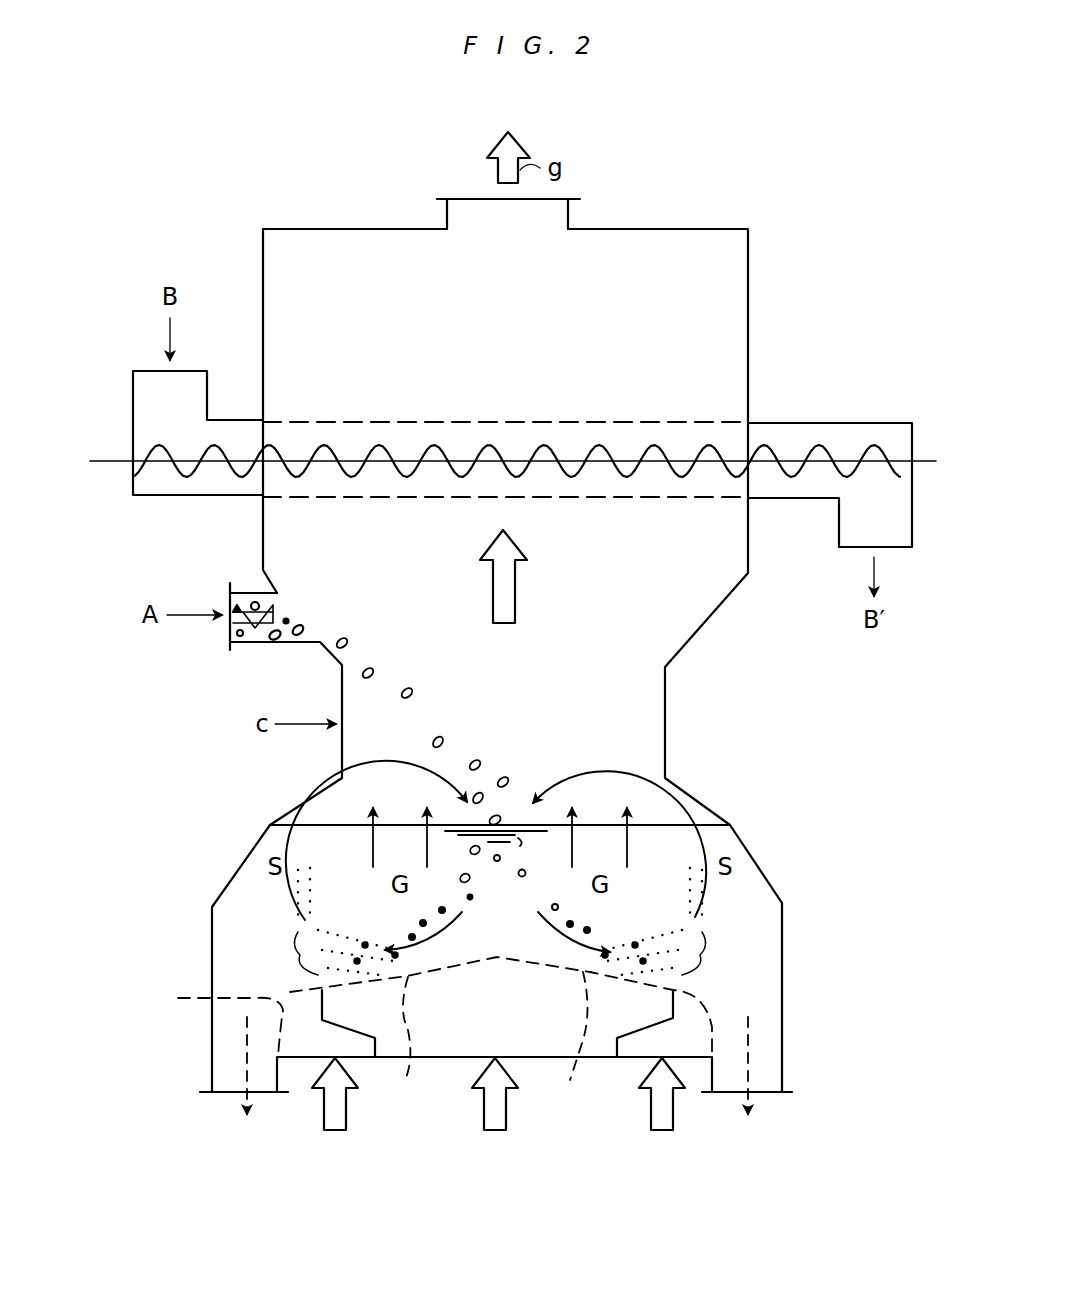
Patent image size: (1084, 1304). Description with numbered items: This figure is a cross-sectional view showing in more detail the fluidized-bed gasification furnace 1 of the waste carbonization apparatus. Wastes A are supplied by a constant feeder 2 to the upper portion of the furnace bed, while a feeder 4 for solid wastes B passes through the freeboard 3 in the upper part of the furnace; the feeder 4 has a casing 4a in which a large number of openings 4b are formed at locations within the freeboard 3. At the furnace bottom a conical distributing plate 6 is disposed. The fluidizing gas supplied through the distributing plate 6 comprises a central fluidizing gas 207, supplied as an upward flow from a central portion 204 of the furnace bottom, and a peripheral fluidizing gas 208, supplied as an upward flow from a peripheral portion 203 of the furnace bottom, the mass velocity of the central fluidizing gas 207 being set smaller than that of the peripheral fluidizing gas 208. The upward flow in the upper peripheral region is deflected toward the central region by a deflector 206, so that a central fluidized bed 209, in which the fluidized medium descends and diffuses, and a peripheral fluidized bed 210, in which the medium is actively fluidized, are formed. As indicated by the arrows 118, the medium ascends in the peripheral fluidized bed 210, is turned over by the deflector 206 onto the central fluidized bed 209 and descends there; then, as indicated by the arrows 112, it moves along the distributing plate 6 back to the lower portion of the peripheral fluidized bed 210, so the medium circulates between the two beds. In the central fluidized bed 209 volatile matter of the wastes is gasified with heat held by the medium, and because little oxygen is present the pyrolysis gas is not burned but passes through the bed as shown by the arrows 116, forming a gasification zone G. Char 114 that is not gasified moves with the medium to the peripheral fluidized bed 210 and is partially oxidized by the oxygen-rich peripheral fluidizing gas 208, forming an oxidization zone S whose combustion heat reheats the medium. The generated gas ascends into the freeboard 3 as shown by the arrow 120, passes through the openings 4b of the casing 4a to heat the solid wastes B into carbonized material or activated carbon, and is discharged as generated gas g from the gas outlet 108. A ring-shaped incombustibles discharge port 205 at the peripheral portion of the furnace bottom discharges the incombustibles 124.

The fluidized-bed gasification furnace 1 is at (751, 322).
The constant feeder 2 is at (240, 578).
The freeboard 3 is at (398, 340).
The feeder 4 is at (839, 423).
The casing 4a is at (650, 422).
The openings 4b is at (638, 499).
The distributing plate 6 is at (573, 1041).
The gas outlet 108 is at (556, 196).
The arrows 112 is at (497, 935).
The char 114 is at (500, 952).
The arrows 116 is at (483, 842).
The arrows 118 is at (496, 834).
The arrow 120 is at (516, 580).
The incombustibles 124 is at (482, 1065).
The peripheral portion 203 is at (418, 1007).
The central portion 204 is at (413, 1044).
The incombustibles discharge port 205 is at (770, 1057).
The deflector 206 is at (702, 805).
The central fluidizing gas 207 is at (484, 1100).
The peripheral fluidizing gas 208 is at (322, 1110).
The central fluidized bed 209 is at (473, 903).
The peripheral fluidized bed 210 is at (238, 927).